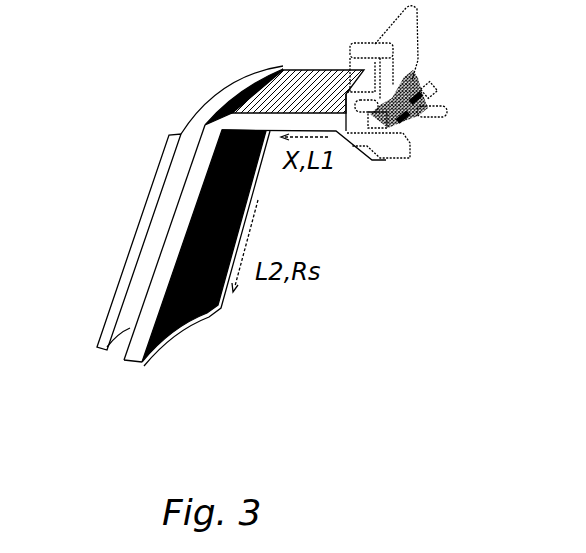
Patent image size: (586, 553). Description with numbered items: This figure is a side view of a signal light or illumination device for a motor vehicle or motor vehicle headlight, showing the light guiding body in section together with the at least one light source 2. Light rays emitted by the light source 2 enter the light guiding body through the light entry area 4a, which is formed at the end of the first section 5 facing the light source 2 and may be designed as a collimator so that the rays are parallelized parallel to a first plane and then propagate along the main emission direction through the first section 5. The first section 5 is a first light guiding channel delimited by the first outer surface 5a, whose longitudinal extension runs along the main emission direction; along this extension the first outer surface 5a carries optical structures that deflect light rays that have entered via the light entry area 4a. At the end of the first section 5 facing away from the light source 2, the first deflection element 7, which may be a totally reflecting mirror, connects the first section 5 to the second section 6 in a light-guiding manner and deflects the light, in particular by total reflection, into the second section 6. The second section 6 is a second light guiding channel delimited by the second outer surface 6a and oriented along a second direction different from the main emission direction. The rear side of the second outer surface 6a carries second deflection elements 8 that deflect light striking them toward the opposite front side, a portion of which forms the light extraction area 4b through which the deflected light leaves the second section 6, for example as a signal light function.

The light source 2 is at (420, 97).
The light entry area 4a is at (380, 115).
The light extraction area 4b is at (155, 235).
The first section 5 is at (317, 88).
The first outer surface 5a is at (283, 68).
The second section 6 is at (123, 360).
The second outer surface 6a is at (265, 147).
The first deflection element 7 is at (212, 112).
The second deflection elements 8 is at (180, 333).